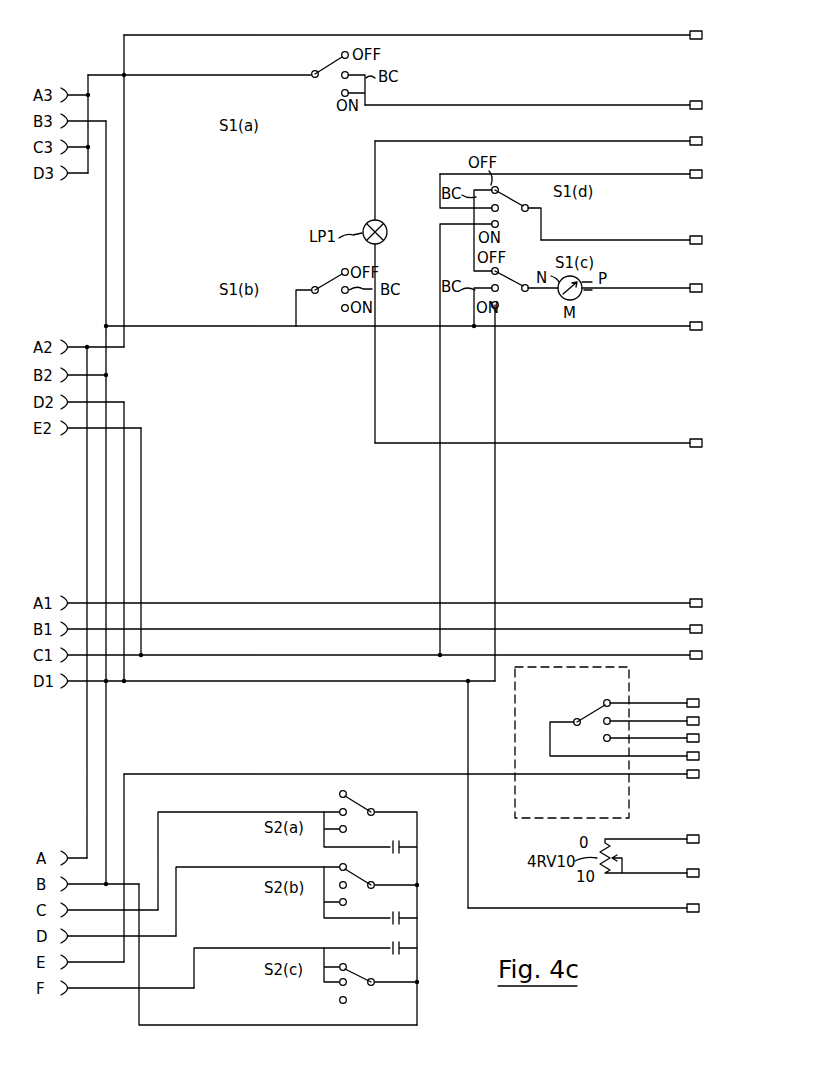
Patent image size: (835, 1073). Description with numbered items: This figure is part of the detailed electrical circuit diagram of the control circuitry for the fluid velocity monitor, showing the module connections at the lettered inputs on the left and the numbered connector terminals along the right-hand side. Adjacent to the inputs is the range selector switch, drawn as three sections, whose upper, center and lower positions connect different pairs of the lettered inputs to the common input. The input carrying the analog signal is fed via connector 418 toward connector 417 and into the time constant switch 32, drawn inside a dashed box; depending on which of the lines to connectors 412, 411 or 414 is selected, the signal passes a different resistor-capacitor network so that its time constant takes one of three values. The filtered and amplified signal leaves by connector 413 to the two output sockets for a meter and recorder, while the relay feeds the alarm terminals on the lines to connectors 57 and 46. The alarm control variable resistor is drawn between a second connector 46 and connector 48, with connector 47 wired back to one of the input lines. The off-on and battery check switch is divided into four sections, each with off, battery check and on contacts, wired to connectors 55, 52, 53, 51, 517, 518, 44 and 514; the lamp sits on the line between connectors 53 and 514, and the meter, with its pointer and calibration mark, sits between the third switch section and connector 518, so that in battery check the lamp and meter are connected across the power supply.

The connector 55 is at (415, 24).
The connector 52 is at (535, 94).
The connector 53 is at (540, 130).
The connector 51 is at (573, 163).
The connector 517 is at (623, 229).
The connector 518 is at (644, 277).
The connector 44 is at (406, 315).
The connector 514 is at (540, 432).
The connector 57 is at (387, 592).
The connector 46 is at (387, 723).
The connector 413 is at (387, 644).
The connector 412 is at (710, 703).
The connector 411 is at (710, 721).
The connector 414 is at (710, 738).
The connector 417 is at (710, 756).
The connector 418 is at (429, 774).
The connector 48 is at (688, 862).
The connector 47 is at (584, 897).
The time constant switch 32 is at (540, 801).